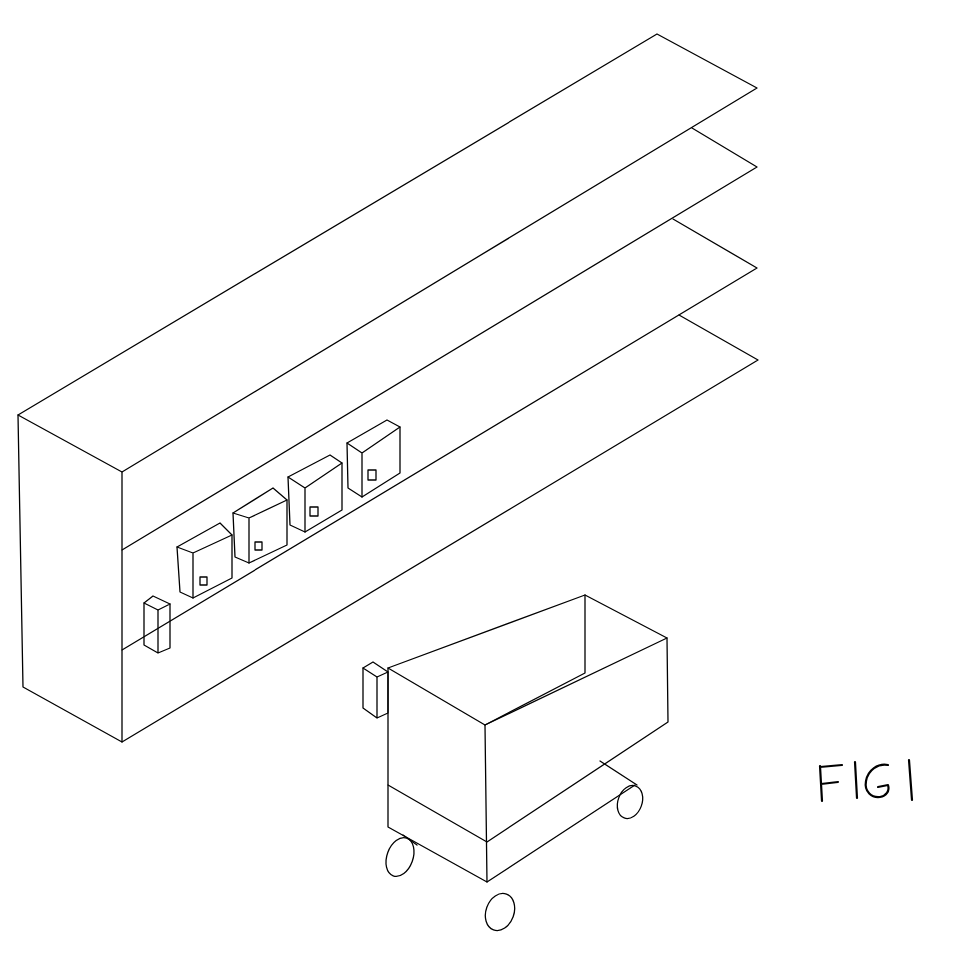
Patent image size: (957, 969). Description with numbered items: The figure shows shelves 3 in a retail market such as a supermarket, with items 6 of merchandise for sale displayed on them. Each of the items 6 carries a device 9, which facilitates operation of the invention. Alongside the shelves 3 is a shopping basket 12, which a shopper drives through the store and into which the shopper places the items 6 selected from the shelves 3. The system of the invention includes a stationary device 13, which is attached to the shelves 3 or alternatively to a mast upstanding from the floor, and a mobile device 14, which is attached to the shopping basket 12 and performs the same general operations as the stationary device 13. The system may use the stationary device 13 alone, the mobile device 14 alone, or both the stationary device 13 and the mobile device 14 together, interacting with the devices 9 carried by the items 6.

The shelves 3 is at (43, 553).
The items 6 is at (313, 460).
The device 9 is at (207, 580).
The shopping basket 12 is at (648, 628).
The stationary device 13 is at (173, 635).
The mobile device 14 is at (363, 698).